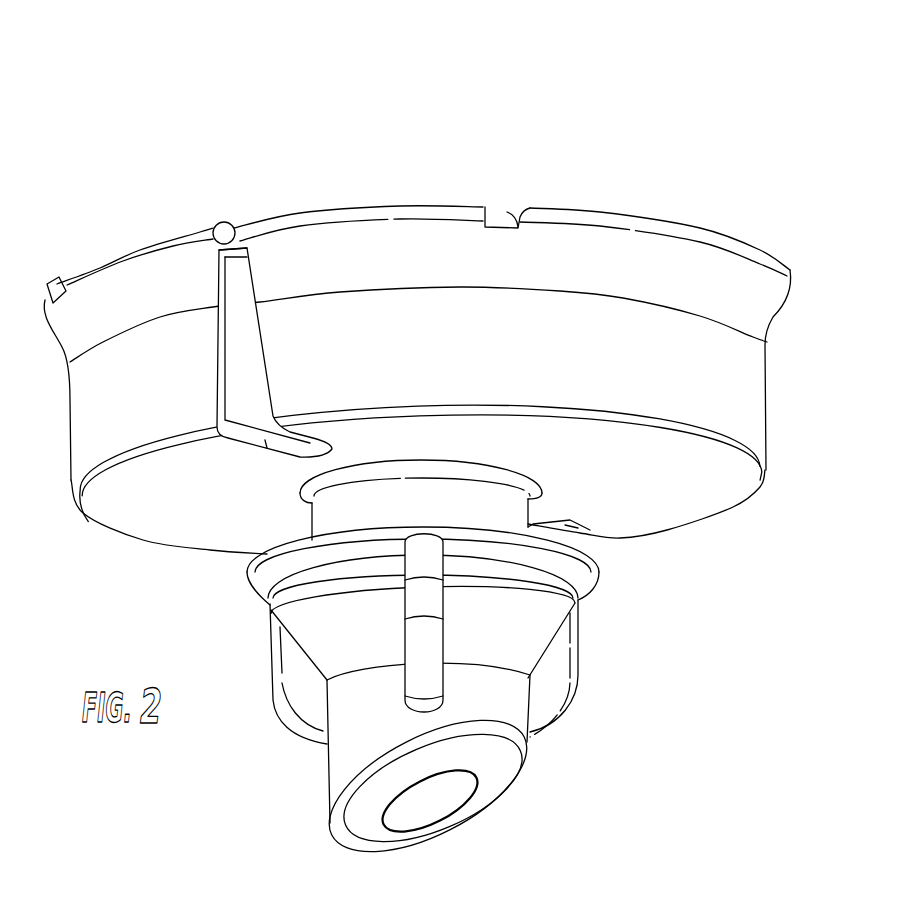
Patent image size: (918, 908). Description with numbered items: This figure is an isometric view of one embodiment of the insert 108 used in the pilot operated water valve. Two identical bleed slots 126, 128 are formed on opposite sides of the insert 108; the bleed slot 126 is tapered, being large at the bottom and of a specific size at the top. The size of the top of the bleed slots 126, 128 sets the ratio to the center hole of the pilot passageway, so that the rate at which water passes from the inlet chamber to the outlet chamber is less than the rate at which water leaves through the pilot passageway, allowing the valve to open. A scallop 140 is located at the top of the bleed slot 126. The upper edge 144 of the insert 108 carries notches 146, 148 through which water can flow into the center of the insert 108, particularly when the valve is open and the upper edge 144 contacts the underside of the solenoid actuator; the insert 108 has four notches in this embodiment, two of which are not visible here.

The insert 108 is at (145, 114).
The bleed slot 126 is at (240, 378).
The bleed slot 128 is at (583, 535).
The scallop 140 is at (220, 226).
The upper edge 144 is at (770, 264).
The notch 146 is at (52, 280).
The notch 148 is at (495, 226).